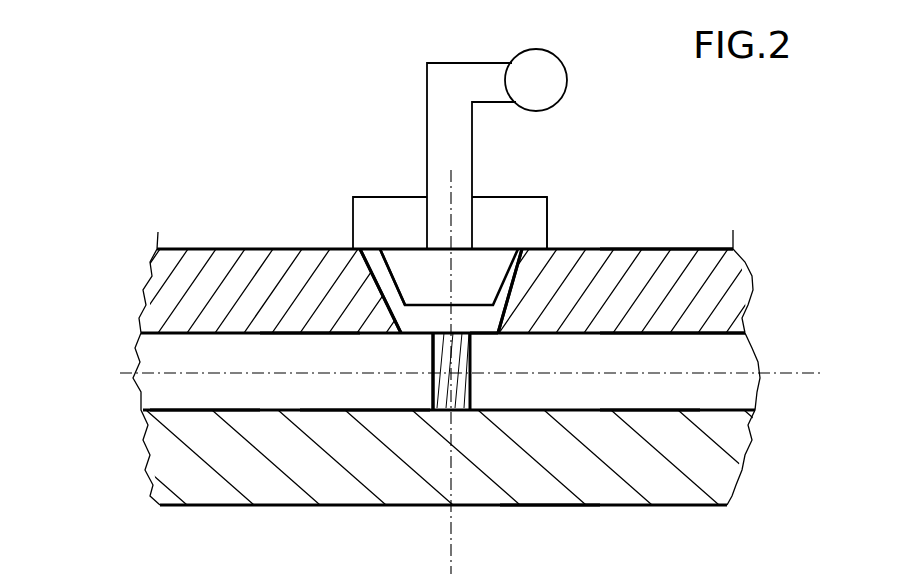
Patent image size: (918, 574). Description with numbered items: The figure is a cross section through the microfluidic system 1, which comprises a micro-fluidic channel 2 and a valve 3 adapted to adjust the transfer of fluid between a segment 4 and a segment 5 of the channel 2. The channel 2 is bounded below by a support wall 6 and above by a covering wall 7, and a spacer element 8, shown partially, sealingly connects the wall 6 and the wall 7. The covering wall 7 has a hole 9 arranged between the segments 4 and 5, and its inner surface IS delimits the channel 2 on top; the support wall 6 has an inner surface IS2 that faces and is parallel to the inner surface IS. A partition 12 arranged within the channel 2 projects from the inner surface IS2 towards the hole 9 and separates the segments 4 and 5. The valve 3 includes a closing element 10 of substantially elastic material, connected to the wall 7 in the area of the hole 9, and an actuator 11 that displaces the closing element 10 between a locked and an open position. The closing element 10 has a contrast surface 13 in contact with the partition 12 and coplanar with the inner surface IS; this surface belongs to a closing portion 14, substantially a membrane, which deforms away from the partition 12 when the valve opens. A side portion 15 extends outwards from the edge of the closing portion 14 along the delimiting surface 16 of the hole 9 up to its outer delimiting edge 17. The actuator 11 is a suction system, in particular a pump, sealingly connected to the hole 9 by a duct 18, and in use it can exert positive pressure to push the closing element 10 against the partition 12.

The microfluidic system 1 is at (807, 198).
The micro-fluidic channel 2 is at (365, 420).
The valve 3 is at (485, 161).
The segment 4 is at (194, 406).
The segment 5 is at (687, 341).
The support wall 6 is at (155, 458).
The covering wall 7 is at (638, 265).
The spacer element 8 is at (565, 539).
The hole 9 is at (427, 273).
The closing element 10 is at (472, 293).
The actuator 11 is at (550, 80).
The partition 12 is at (457, 400).
The contrast surface 13 is at (413, 338).
The closing portion 14 is at (478, 324).
The side portion 15 is at (514, 279).
The delimiting surface 16 is at (388, 295).
The outer delimiting edge 17 is at (539, 246).
The duct 18 is at (460, 73).
The inner surface IS is at (307, 338).
The inner surface IS2 is at (639, 404).